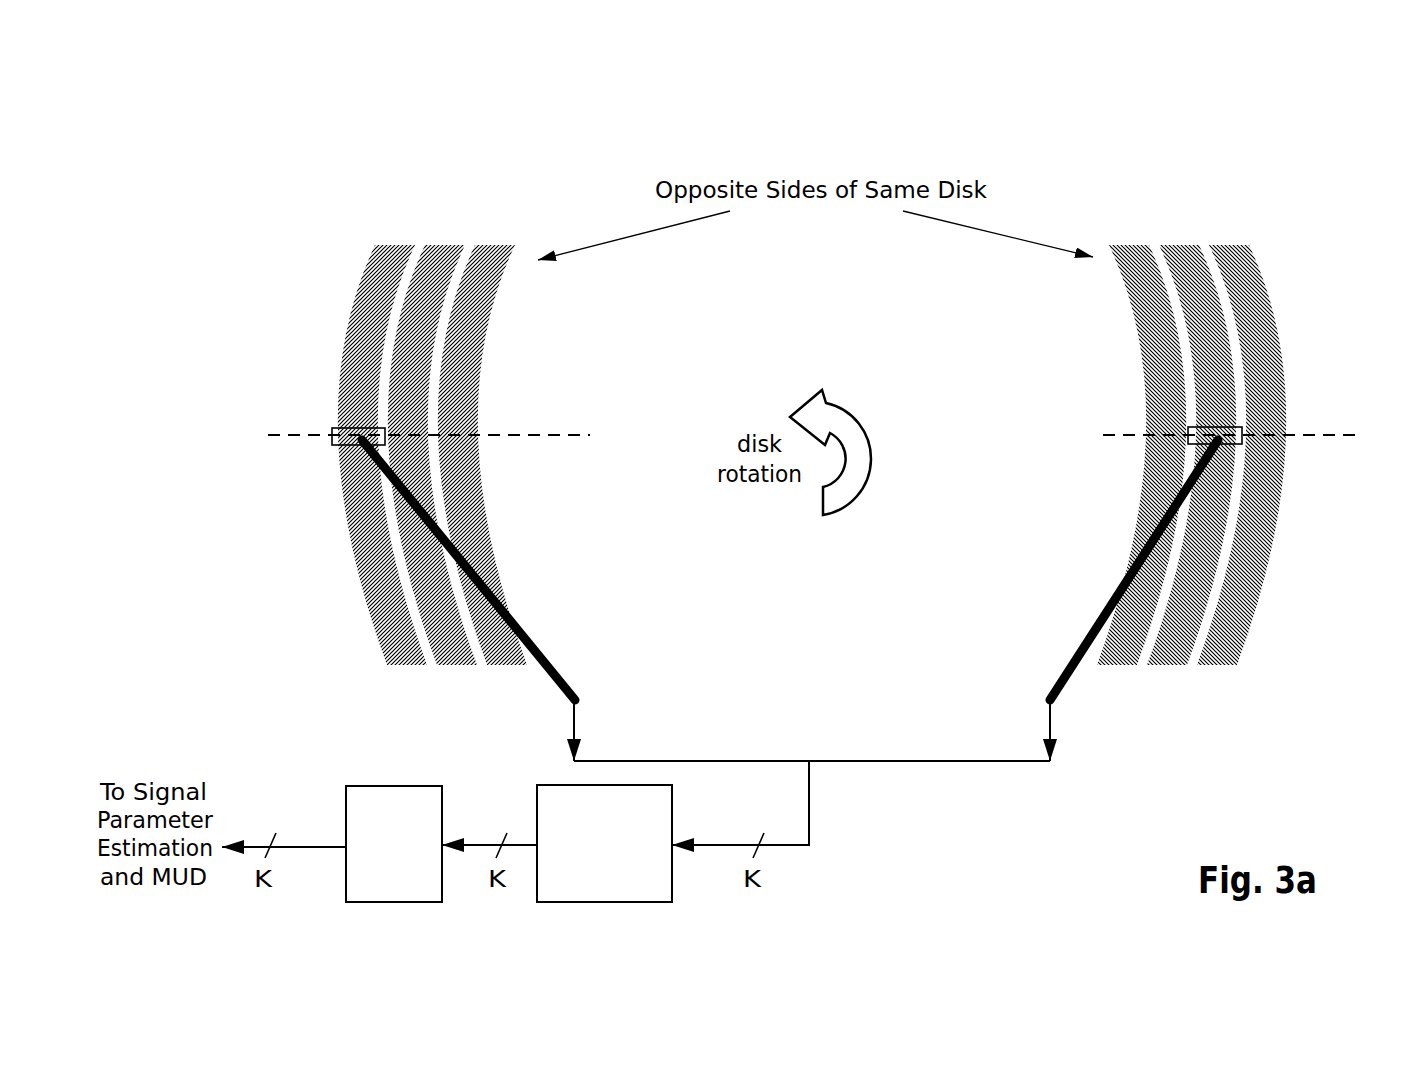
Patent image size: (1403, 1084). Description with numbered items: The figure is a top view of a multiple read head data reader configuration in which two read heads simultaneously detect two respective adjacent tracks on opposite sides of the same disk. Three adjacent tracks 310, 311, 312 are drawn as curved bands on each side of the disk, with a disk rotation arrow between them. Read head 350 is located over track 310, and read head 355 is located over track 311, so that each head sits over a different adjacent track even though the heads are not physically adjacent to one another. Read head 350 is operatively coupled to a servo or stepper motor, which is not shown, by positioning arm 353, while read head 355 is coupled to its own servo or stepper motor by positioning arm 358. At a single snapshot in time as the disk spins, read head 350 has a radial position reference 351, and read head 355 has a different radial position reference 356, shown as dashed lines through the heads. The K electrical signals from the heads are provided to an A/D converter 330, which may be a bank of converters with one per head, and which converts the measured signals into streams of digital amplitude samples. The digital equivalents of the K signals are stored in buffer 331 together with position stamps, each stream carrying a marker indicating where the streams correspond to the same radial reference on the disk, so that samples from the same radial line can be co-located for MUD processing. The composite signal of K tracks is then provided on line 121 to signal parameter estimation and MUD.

The track 310 is at (388, 243).
The track 311 is at (422, 192).
The track 312 is at (480, 192).
The read head 350 is at (333, 430).
The radial position reference 351 is at (507, 433).
The positioning arm 353 is at (549, 657).
The read head 355 is at (1237, 424).
The radial position reference 356 is at (1112, 433).
The positioning arm 358 is at (1073, 650).
The A/D converter 330 is at (604, 843).
The buffer 331 is at (394, 844).
The line 121 is at (284, 840).